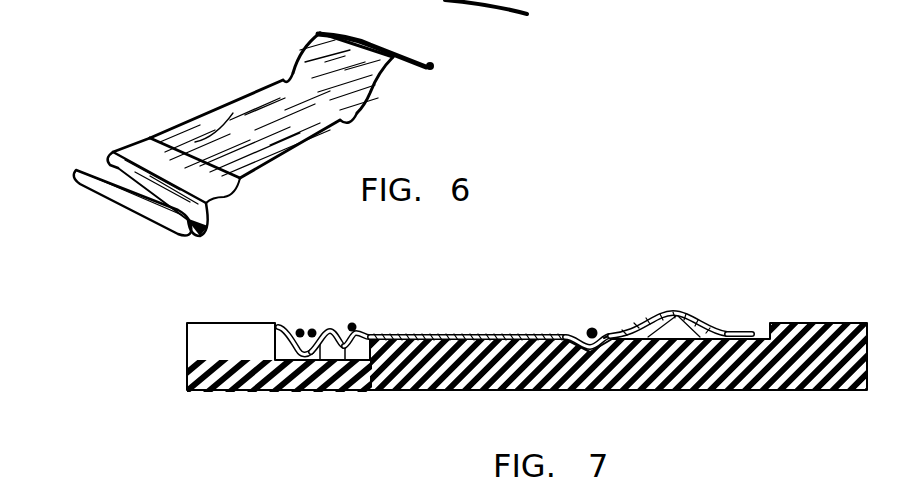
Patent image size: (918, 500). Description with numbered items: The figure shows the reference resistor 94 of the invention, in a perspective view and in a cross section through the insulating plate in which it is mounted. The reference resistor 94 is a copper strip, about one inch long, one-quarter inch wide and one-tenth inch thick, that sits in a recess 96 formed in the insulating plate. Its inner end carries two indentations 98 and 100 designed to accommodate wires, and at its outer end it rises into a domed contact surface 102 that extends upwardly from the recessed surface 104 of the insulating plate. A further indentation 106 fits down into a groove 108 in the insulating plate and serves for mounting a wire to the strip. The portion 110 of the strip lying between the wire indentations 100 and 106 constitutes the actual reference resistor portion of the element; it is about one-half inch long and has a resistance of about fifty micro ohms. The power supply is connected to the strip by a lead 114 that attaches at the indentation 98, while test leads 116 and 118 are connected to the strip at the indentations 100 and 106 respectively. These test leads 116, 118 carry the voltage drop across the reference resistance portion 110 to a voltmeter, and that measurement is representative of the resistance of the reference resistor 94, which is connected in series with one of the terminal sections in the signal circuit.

In FIG. 6, the reference resistor 94 is at (196, 92).
In FIG. 7, the reference resistor 94 is at (545, 240).
In FIG. 7, the recess 96 is at (281, 328).
In FIG. 6, the indentation 98 is at (113, 165).
In FIG. 7, the indentation 98 is at (333, 362).
In FIG. 6, the indentation 100 is at (147, 143).
In FIG. 7, the indentation 100 is at (357, 372).
In FIG. 6, the domed contact surface 102 is at (372, 46).
In FIG. 7, the domed contact surface 102 is at (678, 312).
In FIG. 7, the recessed surface 104 is at (697, 337).
In FIG. 6, the indentation 106 is at (290, 80).
In FIG. 7, the indentation 106 is at (618, 353).
In FIG. 7, the groove 108 is at (567, 353).
In FIG. 6, the reference resistance portion 110 is at (236, 113).
In FIG. 7, the reference resistance portion 110 is at (565, 333).
In FIG. 7, the lead 114 is at (314, 330).
In FIG. 7, the test lead 116 is at (352, 329).
In FIG. 7, the test lead 118 is at (592, 328).